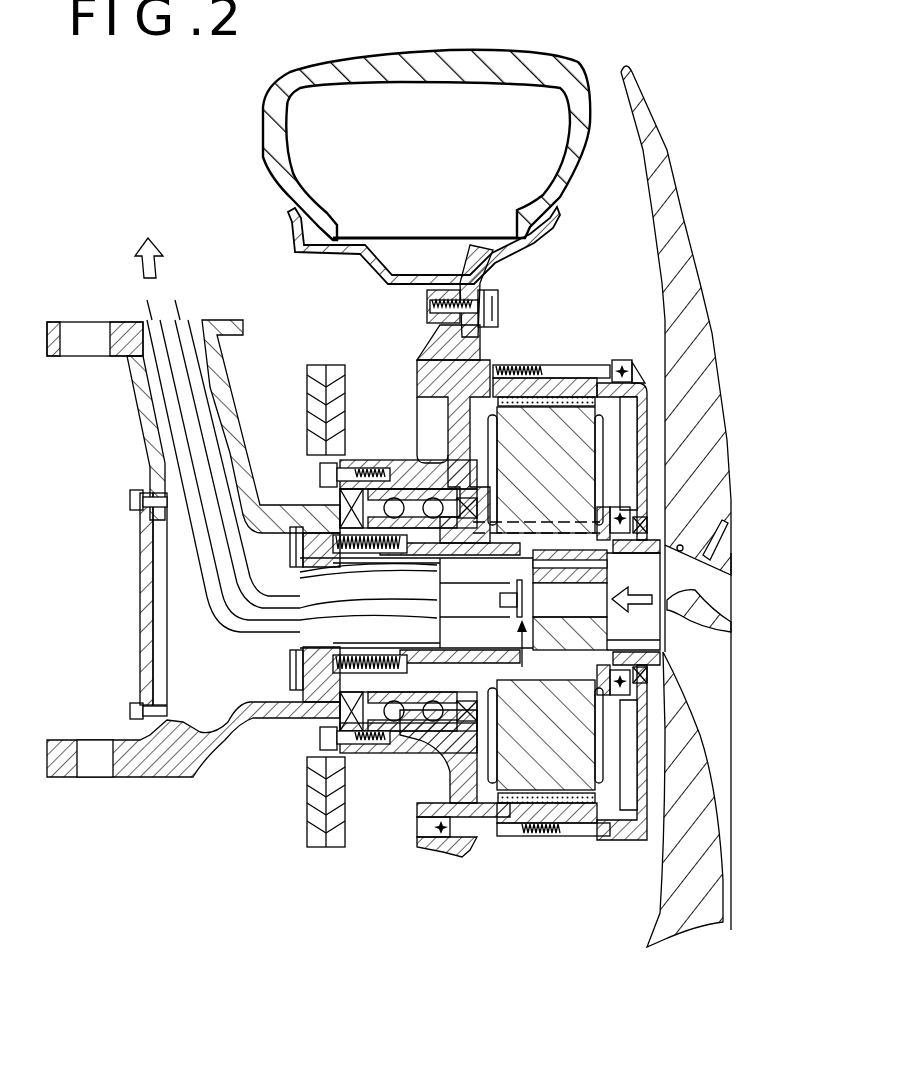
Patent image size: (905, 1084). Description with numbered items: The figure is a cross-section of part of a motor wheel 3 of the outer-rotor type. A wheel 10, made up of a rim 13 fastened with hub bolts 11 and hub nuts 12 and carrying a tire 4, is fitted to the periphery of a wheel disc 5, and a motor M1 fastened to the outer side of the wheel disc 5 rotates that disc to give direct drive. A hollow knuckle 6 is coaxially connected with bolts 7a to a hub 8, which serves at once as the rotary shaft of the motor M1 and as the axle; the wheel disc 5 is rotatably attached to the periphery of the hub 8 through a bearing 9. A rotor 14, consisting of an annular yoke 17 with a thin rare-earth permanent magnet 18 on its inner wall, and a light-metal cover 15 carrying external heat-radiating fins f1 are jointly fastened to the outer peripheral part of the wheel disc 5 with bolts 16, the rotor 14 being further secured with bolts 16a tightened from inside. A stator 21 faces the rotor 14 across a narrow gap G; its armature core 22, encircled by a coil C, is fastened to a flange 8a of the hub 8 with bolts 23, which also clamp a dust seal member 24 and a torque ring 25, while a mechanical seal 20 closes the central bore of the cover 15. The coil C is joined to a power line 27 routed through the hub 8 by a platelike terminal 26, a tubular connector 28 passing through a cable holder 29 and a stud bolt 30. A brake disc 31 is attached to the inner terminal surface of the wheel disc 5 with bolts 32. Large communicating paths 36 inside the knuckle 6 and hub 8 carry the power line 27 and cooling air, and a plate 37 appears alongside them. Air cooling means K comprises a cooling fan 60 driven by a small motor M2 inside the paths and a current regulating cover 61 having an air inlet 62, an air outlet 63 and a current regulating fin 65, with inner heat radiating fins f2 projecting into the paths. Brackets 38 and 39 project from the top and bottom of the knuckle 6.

The motor wheel 3 is at (183, 133).
The tire 4 is at (275, 178).
The wheel disc 5 is at (477, 344).
The knuckle 6 is at (265, 498).
The bolts 7a is at (285, 670).
The hub 8 is at (428, 562).
The flange 8a is at (492, 524).
The bearing 9 is at (405, 487).
The wheel 10 is at (228, 172).
The hub bolts 11 is at (492, 312).
The hub nuts 12 is at (430, 324).
The rim 13 is at (292, 214).
The rotor 14 is at (537, 342).
The cover 15 is at (660, 385).
The bolts 16 is at (622, 373).
The bolts 16a is at (442, 840).
The annular yoke 17 is at (542, 367).
The permanent magnet 18 is at (578, 378).
The mechanical seal 20 is at (658, 573).
The stator 21 is at (660, 495).
The armature core 22 is at (532, 467).
The bolts 23 is at (612, 492).
The dust seal member 24 is at (660, 550).
The torque ring 25 is at (615, 543).
The platelike terminal 26 is at (632, 608).
The power line 27 is at (245, 586).
The connector 28 is at (570, 581).
The cable holder 29 is at (660, 640).
The stud bolt 30 is at (570, 616).
The brake disc 31 is at (328, 365).
The bolts 32 is at (322, 472).
The communicating paths 36 is at (190, 653).
The brake plate 37 is at (140, 600).
The bracket 38 is at (52, 357).
The bracket 39 is at (60, 750).
The cooling fan 60 is at (520, 628).
The current regulating cover 61 is at (690, 256).
The air inlet 62 is at (758, 793).
The air outlet 63 is at (710, 522).
The current regulating fin 65 is at (722, 452).
The gap G is at (596, 403).
The coil C is at (602, 468).
The air cooling means K is at (543, 660).
The motor M1 is at (612, 333).
The small motor M2 is at (491, 623).
The external heat-radiating fins f1 is at (660, 415).
The inner heat radiating fins f2 is at (462, 612).